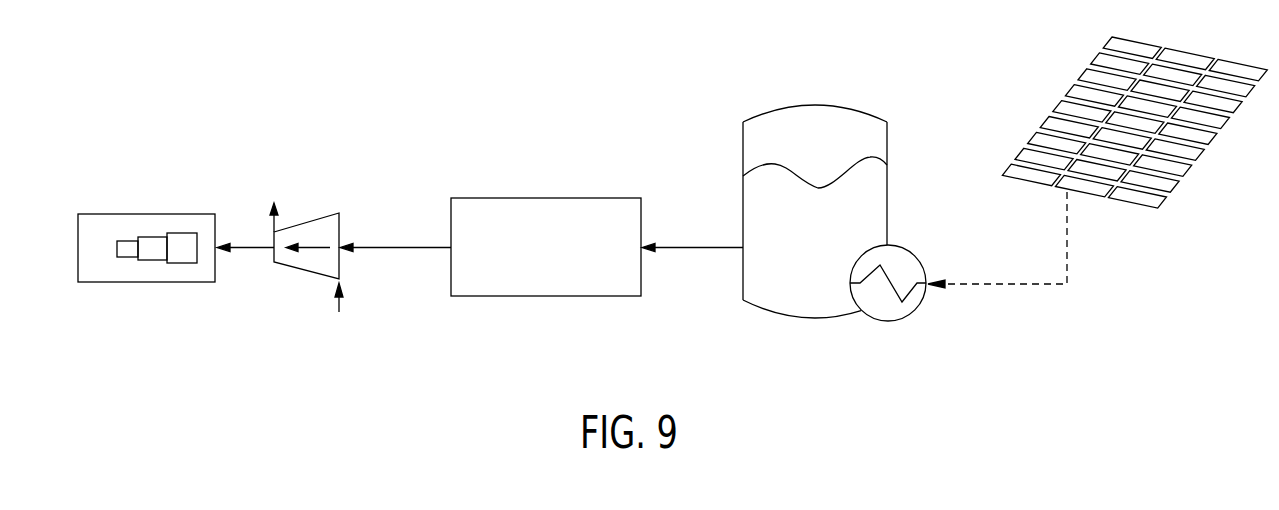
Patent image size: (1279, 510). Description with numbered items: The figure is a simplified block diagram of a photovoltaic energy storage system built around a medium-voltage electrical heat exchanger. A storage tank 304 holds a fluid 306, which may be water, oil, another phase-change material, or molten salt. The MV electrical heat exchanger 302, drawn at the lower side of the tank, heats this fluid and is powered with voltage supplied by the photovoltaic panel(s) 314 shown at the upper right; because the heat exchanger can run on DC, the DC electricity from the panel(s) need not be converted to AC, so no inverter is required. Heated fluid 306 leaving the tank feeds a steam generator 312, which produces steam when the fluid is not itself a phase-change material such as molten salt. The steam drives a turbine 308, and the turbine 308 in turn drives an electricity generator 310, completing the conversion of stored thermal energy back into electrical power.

The MV electrical heat exchanger 302 is at (890, 321).
The storage tank 304 is at (815, 105).
The fluid 306 is at (766, 296).
The turbine 308 is at (307, 272).
The electricity generator 310 is at (133, 282).
The steam generator 312 is at (550, 197).
The photovoltaic panel(s) 314 is at (1148, 205).